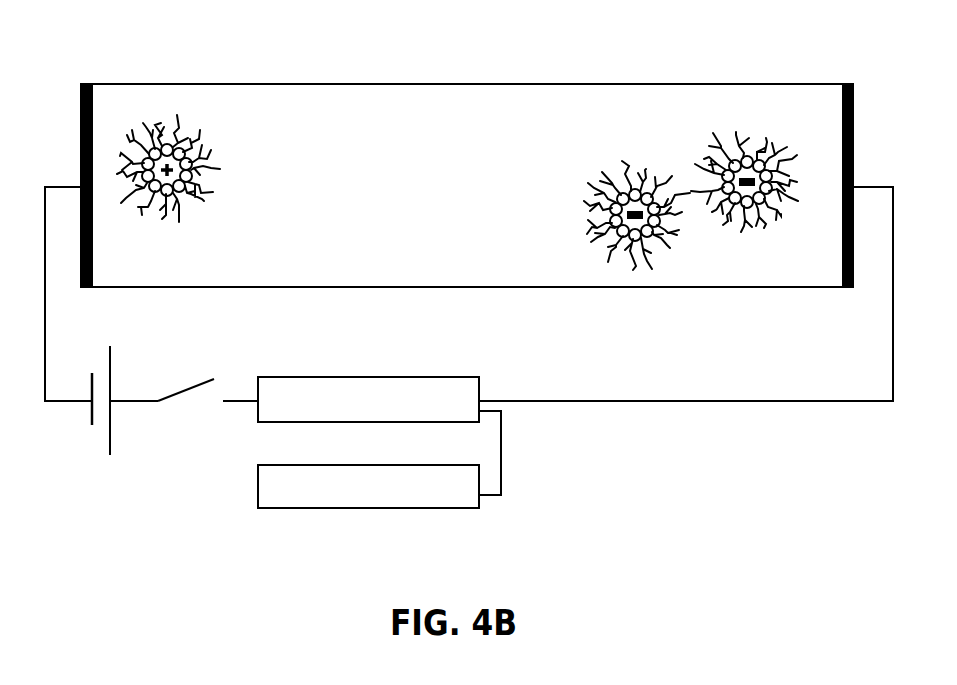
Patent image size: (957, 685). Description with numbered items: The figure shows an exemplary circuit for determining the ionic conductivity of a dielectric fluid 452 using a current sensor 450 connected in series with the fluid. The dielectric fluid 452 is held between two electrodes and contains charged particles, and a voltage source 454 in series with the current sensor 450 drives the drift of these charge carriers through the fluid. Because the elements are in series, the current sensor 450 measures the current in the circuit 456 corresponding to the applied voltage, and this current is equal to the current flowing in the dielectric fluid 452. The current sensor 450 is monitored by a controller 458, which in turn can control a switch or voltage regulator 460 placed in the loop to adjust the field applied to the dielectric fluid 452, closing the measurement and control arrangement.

The current sensor 450 is at (480, 387).
The dielectric fluid 452 is at (272, 112).
The voltage source 454 is at (78, 410).
The circuit 456 is at (842, 410).
The controller 458 is at (453, 510).
The switch or voltage regulator 460 is at (202, 405).